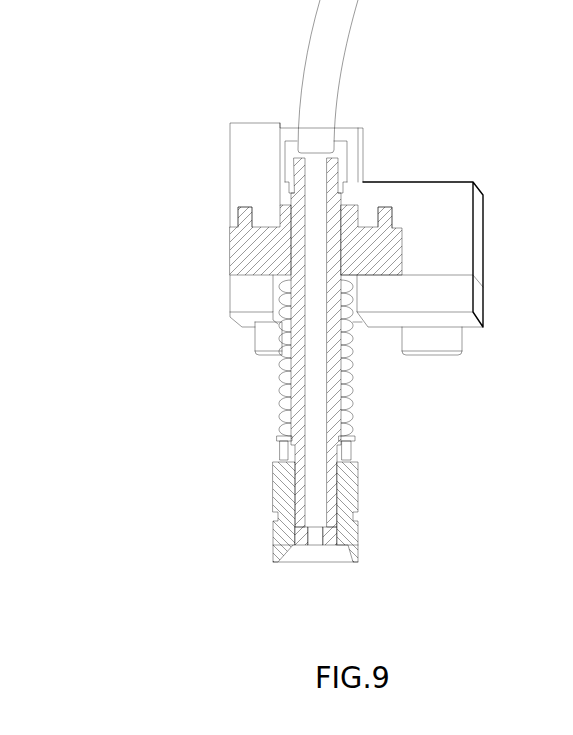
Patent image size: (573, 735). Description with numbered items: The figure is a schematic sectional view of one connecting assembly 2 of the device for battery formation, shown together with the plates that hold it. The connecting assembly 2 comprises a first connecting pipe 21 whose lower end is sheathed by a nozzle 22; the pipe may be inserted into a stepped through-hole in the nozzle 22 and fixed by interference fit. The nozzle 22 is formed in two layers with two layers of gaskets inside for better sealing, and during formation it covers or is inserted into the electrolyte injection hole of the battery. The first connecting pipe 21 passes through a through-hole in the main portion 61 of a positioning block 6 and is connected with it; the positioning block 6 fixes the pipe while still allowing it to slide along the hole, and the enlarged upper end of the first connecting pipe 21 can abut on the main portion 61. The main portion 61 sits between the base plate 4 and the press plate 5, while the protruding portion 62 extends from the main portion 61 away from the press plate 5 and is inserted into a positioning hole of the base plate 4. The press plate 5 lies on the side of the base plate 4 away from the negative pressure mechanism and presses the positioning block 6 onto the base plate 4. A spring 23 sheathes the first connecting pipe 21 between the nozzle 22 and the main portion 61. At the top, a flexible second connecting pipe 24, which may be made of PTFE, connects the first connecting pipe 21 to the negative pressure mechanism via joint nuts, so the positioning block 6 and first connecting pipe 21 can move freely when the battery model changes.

The connecting assembly 2 is at (138, 425).
The base plate 4 is at (248, 182).
The press plate 5 is at (240, 293).
The positioning block 6 is at (135, 205).
The main portion 61 is at (236, 267).
The protruding portion 62 is at (236, 217).
The first connecting pipe 21 is at (337, 412).
The nozzle 22 is at (275, 498).
The spring 23 is at (285, 417).
The second connecting pipe 24 is at (340, 25).